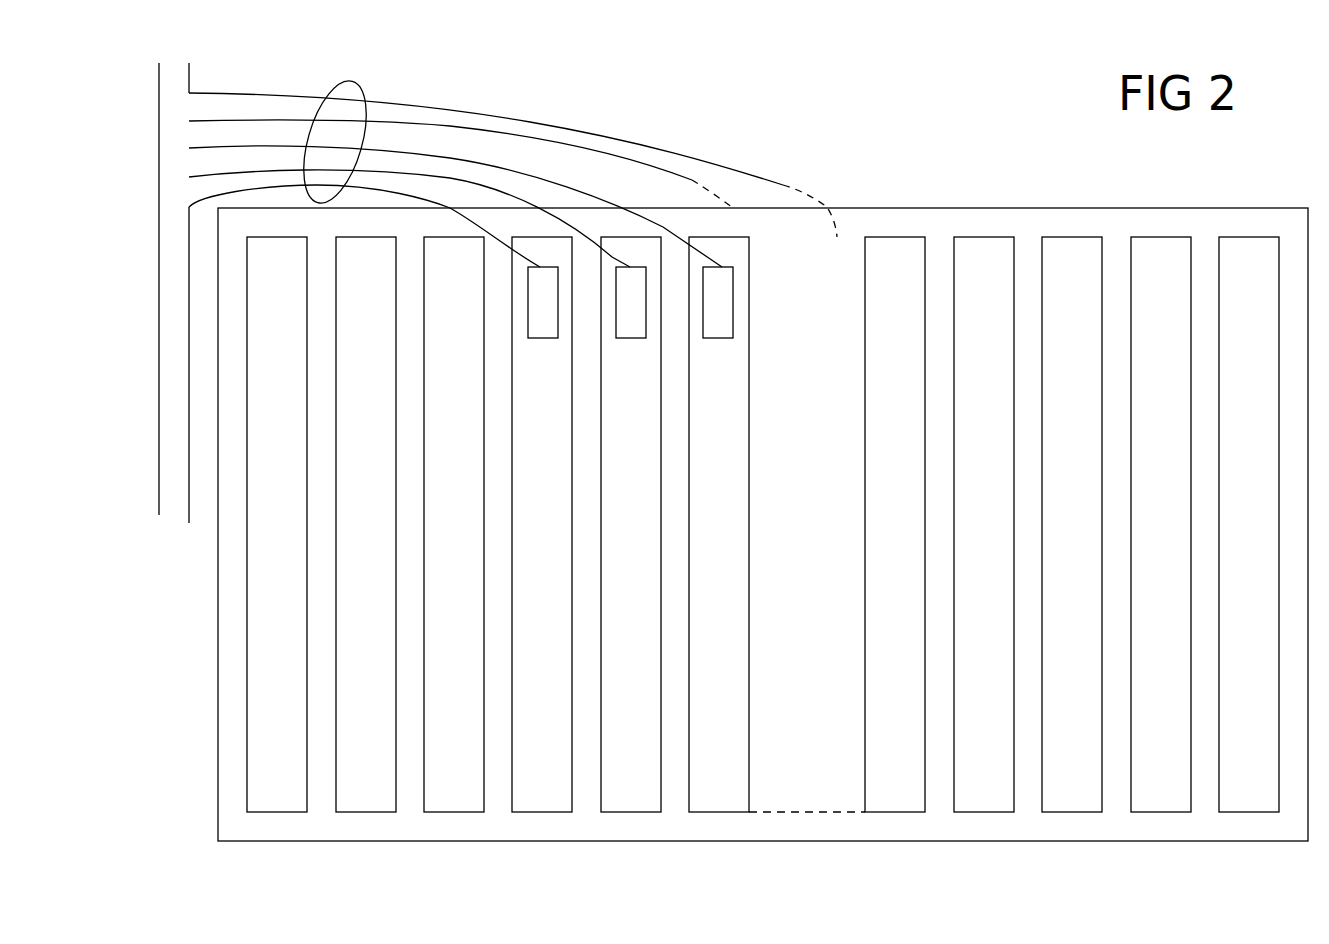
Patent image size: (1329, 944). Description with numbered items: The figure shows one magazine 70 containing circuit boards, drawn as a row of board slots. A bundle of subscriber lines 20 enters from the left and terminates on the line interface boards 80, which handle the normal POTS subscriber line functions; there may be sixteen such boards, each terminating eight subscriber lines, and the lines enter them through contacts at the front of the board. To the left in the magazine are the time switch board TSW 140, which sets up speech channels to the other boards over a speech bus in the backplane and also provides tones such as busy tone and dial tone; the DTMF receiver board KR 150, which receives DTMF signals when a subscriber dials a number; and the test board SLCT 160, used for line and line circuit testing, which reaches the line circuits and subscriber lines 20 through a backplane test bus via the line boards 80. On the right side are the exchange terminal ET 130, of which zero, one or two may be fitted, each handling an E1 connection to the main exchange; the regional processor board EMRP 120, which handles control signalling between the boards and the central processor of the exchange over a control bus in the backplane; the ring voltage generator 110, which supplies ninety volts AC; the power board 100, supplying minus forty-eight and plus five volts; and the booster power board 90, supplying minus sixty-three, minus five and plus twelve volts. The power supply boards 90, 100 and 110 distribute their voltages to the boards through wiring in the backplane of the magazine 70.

The subscriber lines 20 is at (355, 82).
The magazine 70 is at (1116, 209).
The line interface boards 80 is at (543, 580).
The booster power board 90 is at (1244, 238).
The power board 100 is at (1149, 238).
The ring voltage generator 110 is at (1044, 238).
The regional processor board 120 is at (969, 238).
The exchange terminal 130 is at (894, 238).
The time switch board 140 is at (281, 496).
The DTMF receiver board 150 is at (357, 496).
The test board 160 is at (456, 523).